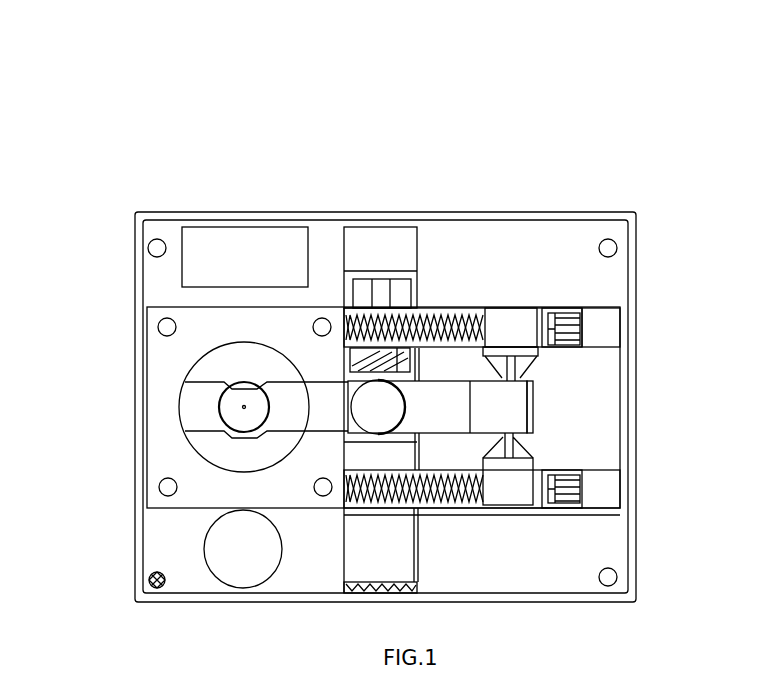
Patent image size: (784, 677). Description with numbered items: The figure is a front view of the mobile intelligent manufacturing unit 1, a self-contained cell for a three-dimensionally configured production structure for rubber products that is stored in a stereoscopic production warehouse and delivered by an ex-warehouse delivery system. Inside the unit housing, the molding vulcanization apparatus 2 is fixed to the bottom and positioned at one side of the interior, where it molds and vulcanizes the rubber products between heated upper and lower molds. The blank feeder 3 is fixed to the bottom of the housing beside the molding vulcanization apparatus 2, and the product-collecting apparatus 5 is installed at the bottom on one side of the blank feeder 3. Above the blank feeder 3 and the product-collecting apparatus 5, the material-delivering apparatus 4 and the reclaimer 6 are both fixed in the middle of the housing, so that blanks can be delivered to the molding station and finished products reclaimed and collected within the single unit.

The mobile intelligent manufacturing unit 1 is at (331, 358).
The molding vulcanization apparatus 2 is at (323, 421).
The blank feeder 3 is at (546, 305).
The material-delivering apparatus 4 is at (616, 259).
The product-collecting apparatus 5 is at (645, 368).
The reclaimer 6 is at (616, 417).